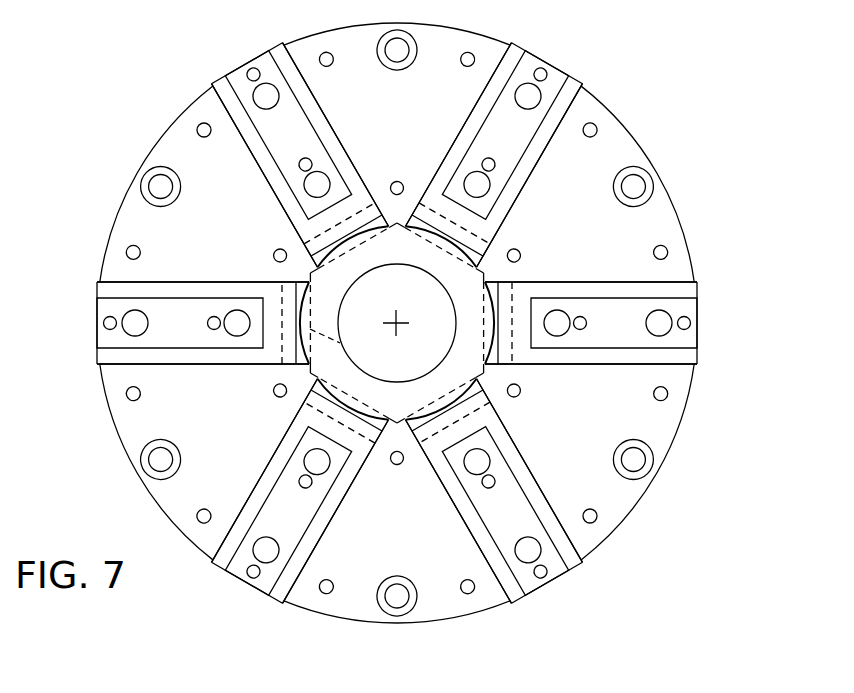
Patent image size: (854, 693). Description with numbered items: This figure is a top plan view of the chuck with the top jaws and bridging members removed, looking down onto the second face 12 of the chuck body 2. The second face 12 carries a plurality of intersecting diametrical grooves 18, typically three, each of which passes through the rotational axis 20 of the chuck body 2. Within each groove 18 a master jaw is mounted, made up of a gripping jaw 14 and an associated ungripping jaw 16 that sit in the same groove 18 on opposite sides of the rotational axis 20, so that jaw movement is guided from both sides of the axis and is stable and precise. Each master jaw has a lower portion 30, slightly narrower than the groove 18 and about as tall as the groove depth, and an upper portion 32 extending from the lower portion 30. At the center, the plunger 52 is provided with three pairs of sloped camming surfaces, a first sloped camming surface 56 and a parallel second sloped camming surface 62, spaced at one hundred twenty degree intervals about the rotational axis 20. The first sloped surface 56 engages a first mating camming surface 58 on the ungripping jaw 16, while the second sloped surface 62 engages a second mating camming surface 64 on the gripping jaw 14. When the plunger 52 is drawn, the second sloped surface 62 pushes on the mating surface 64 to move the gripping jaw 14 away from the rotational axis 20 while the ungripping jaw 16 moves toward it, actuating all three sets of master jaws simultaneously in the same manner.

The chuck body 2 is at (127, 212).
The second face 12 is at (216, 236).
The gripping jaw 14 is at (235, 73).
The ungripping jaw 16 is at (550, 75).
The diametrical groove 18 is at (334, 137).
The rotational axis 20 is at (398, 326).
The lower portion 30 is at (298, 240).
The upper portion 32 is at (280, 146).
The plunger 52 is at (407, 412).
The first sloped camming surface 56 is at (340, 288).
The first mating camming surface 58 is at (340, 343).
The second sloped camming surface 62 is at (493, 298).
The second mating camming surface 64 is at (483, 362).